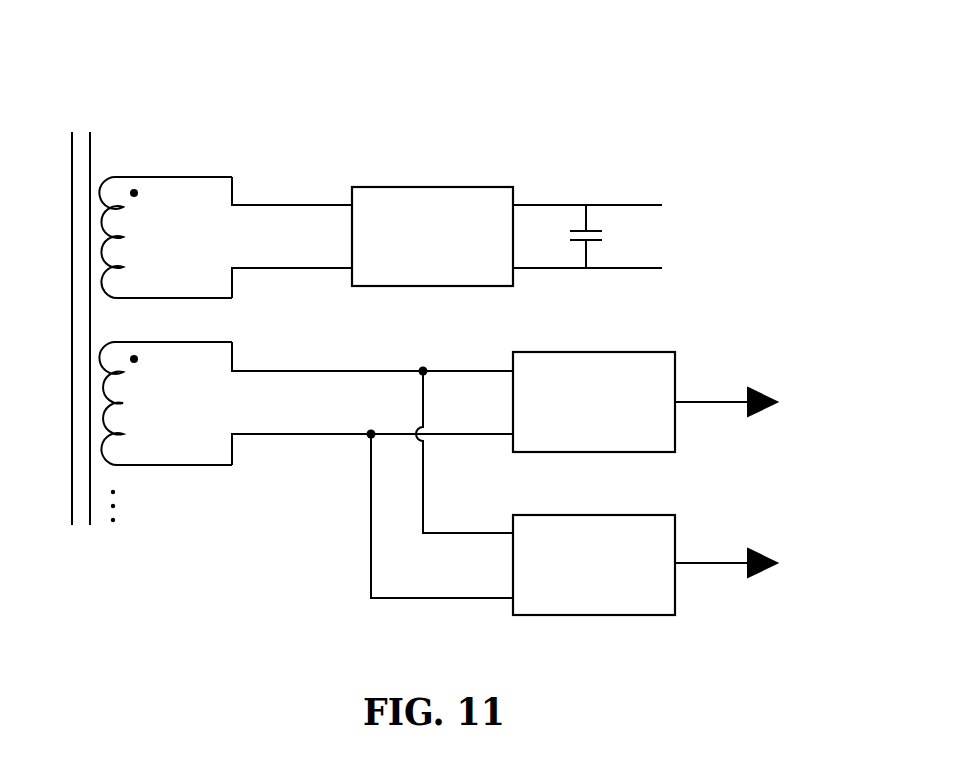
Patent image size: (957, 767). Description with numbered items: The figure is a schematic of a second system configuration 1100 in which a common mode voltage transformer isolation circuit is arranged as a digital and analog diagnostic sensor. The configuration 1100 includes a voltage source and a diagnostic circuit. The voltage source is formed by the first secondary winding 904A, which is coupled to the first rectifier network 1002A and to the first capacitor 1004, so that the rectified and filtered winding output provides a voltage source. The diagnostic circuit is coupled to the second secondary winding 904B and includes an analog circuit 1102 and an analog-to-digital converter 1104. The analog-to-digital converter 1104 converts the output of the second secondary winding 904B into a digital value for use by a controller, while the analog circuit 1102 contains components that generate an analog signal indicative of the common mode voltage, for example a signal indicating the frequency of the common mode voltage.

The second system configuration 1100 is at (698, 84).
The first secondary winding 904A is at (102, 178).
The second secondary winding 904B is at (102, 463).
The first rectifier network 1002A is at (400, 187).
The first capacitor 1004 is at (593, 231).
The analog circuit 1102 is at (578, 352).
The analog-to-digital (A/D) converter 1104 is at (578, 515).